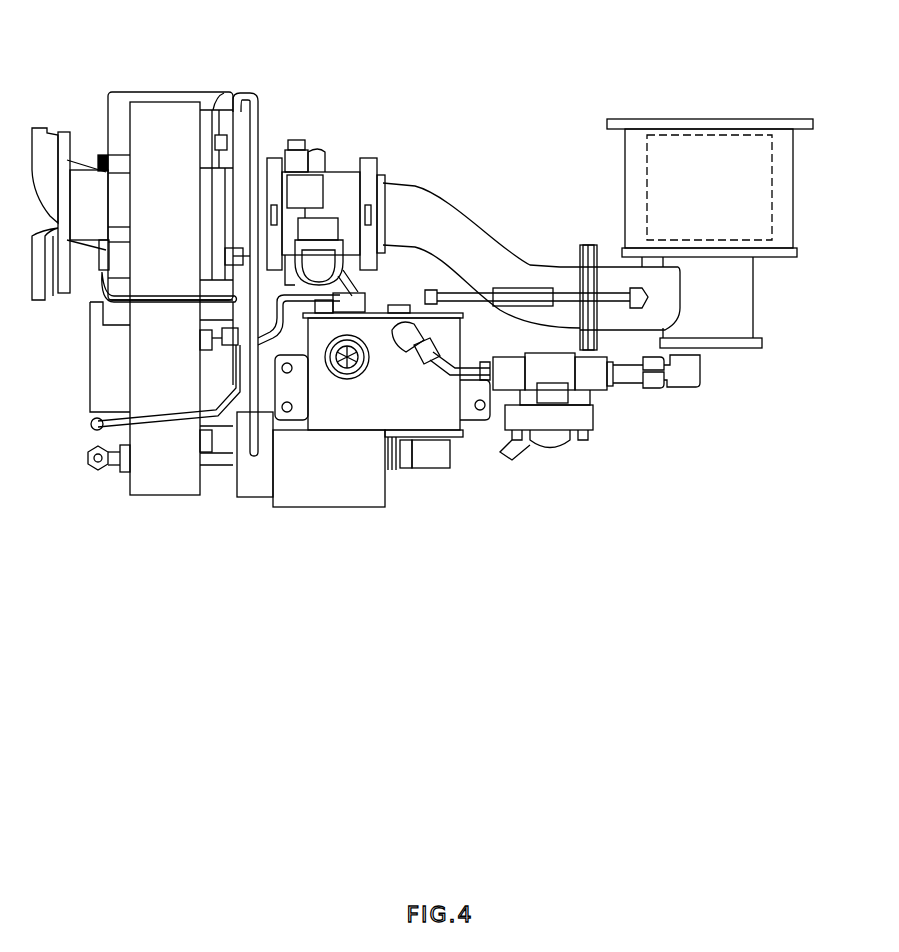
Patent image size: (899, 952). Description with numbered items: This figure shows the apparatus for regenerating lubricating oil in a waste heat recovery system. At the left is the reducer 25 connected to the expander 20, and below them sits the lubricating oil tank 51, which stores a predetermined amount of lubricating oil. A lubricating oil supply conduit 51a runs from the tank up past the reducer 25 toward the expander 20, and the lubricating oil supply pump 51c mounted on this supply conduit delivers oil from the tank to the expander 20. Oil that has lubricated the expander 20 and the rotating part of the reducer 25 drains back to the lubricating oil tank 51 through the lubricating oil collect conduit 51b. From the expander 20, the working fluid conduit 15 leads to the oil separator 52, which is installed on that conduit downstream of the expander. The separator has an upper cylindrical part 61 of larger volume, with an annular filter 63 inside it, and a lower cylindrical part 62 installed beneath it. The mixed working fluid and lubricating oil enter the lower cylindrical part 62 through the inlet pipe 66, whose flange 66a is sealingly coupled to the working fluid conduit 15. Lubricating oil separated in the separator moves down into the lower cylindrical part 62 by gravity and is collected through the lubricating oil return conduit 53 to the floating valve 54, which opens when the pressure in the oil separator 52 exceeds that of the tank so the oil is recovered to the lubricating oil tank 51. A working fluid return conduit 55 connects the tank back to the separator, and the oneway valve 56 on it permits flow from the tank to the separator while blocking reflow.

The working fluid conduit 15 is at (458, 225).
The expander 20 is at (347, 188).
The reducer 25 is at (165, 122).
The lubricating oil tank 51 is at (427, 413).
The lubricating oil supply conduit 51a is at (256, 103).
The lubricating oil collect conduit 51b is at (290, 305).
The lubricating oil supply pump 51c is at (331, 487).
The oil separator 52 is at (707, 182).
The lubricating oil return conduit 53 is at (628, 385).
The floating valve 54 is at (551, 432).
The working fluid return conduit 55 is at (460, 262).
The oneway valve 56 is at (528, 290).
The upper cylindrical part 61 is at (793, 220).
The lower cylindrical part 62 is at (755, 296).
The annular filter 63 is at (772, 185).
The inlet pipe 66 is at (643, 263).
The flange 66a is at (590, 247).